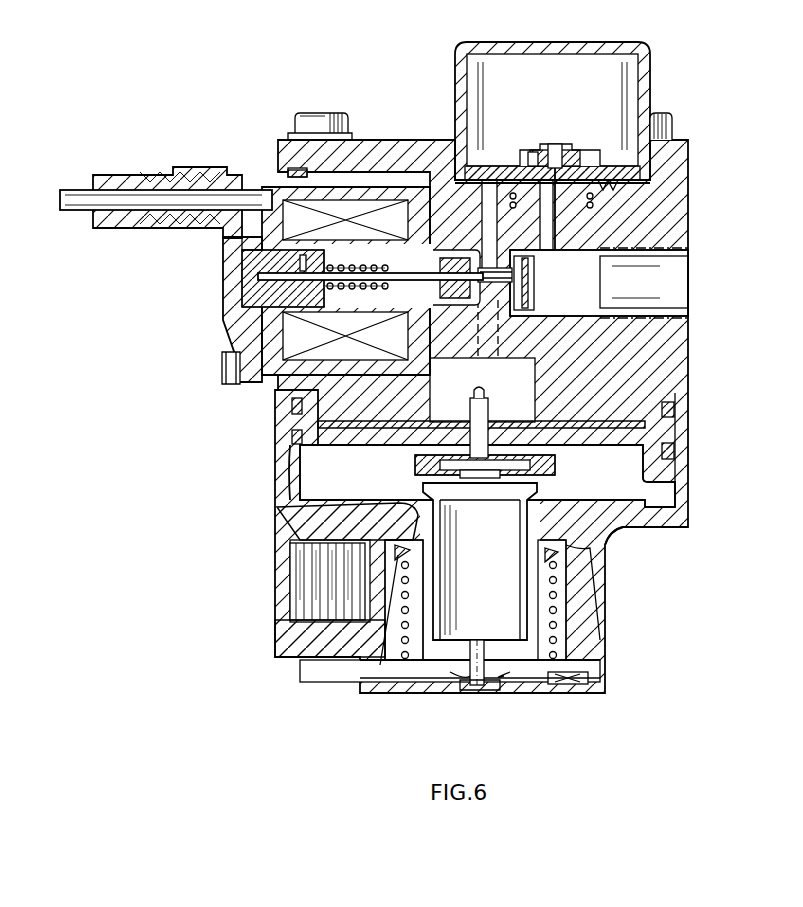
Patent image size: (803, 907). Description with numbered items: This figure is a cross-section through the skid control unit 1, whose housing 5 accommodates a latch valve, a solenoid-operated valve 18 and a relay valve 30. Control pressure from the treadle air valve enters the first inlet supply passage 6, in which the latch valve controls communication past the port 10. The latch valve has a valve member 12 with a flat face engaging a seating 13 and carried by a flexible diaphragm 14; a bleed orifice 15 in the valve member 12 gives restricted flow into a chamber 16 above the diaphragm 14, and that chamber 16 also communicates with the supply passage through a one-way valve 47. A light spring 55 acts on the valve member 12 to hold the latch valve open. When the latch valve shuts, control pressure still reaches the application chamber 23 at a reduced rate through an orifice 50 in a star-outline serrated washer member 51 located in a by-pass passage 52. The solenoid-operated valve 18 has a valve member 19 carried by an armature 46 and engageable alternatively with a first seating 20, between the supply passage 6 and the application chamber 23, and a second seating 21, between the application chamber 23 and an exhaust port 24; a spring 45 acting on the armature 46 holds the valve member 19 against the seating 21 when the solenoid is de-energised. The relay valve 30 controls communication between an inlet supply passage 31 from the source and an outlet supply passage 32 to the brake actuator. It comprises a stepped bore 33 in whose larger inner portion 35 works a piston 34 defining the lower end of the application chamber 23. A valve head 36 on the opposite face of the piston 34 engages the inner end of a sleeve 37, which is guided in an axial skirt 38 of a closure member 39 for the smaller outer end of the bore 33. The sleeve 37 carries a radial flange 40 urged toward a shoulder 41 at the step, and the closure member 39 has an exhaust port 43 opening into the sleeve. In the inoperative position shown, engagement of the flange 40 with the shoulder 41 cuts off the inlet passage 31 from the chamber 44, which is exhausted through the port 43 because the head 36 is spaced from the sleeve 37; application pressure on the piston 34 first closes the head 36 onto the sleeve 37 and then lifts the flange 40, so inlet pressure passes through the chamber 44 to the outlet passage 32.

The unit 1 is at (405, 150).
The housing 5 is at (290, 393).
The first inlet supply passage 6 is at (668, 282).
The port 10 is at (580, 148).
The valve member 12 is at (532, 148).
The seating 13 is at (672, 135).
The flexible diaphragm 14 is at (615, 150).
The bleed orifice 15 is at (554, 148).
The chamber 16 is at (500, 95).
The solenoid-operated valve 18 is at (262, 190).
The valve member 19 is at (432, 245).
The first seating 20 is at (478, 293).
The second seating 21 is at (276, 368).
The application chamber 23 is at (595, 430).
The exhaust port 24 is at (290, 333).
The relay valve 30 is at (430, 720).
The inlet supply passage 31 is at (565, 600).
The outlet supply passage 32 is at (296, 597).
The bore 33 is at (683, 505).
The piston 34 is at (708, 428).
The inner portion of the bore 35 is at (290, 490).
The valve head 36 is at (545, 470).
The sleeve 37 is at (423, 637).
The axial skirt 38 is at (538, 647).
The closure member 39 is at (570, 686).
The radial flange 40 is at (320, 658).
The shoulder 41 is at (327, 510).
The exhaust port 43 is at (447, 667).
The chamber 44 is at (628, 488).
The spring 45 is at (263, 311).
The armature 46 is at (255, 293).
The one-way valve 47 is at (390, 622).
The orifice 50 is at (600, 272).
The member 51 is at (530, 290).
The by-pass passage 52 is at (468, 296).
The light spring 55 is at (605, 200).